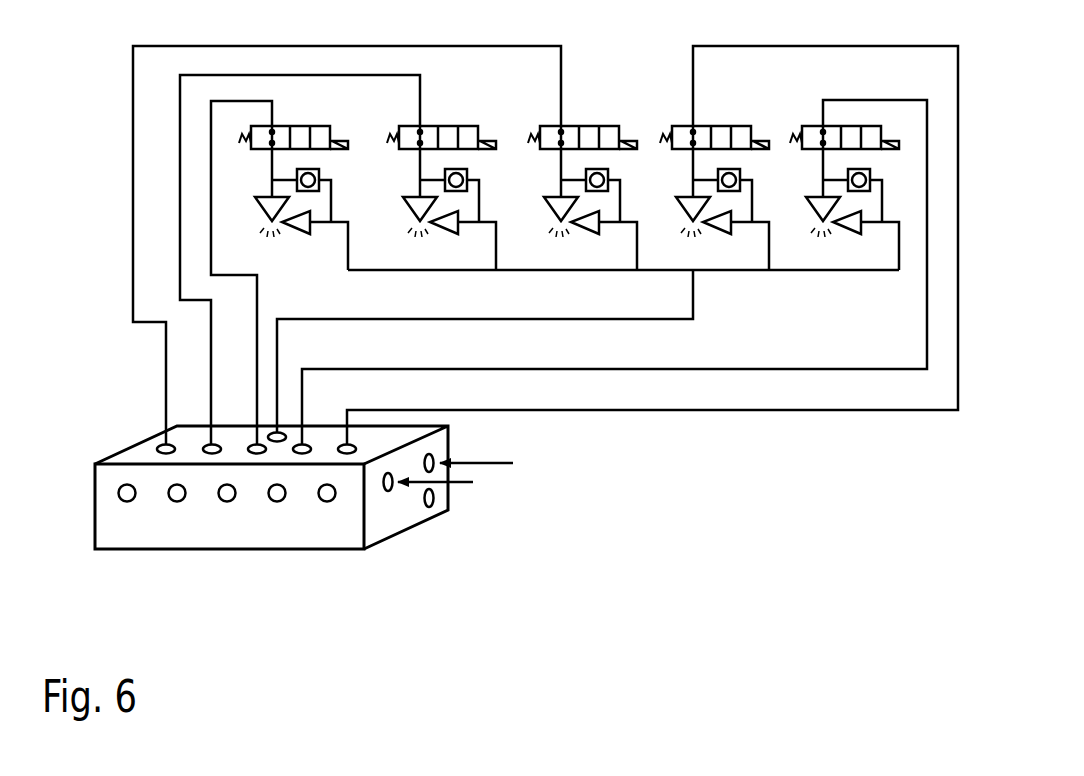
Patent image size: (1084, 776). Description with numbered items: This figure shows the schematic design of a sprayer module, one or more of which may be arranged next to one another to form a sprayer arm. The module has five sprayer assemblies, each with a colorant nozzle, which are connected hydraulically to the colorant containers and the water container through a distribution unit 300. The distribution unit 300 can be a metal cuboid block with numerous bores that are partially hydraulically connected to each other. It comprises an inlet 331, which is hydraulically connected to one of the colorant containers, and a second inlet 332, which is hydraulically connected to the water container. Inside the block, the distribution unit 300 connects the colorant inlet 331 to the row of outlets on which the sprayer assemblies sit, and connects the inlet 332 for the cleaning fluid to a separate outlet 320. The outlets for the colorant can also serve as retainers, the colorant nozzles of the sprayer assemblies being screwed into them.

The distribution unit 300 is at (228, 551).
The outlet 320 is at (290, 432).
The inlet 331 is at (388, 491).
The inlet 332 is at (434, 456).